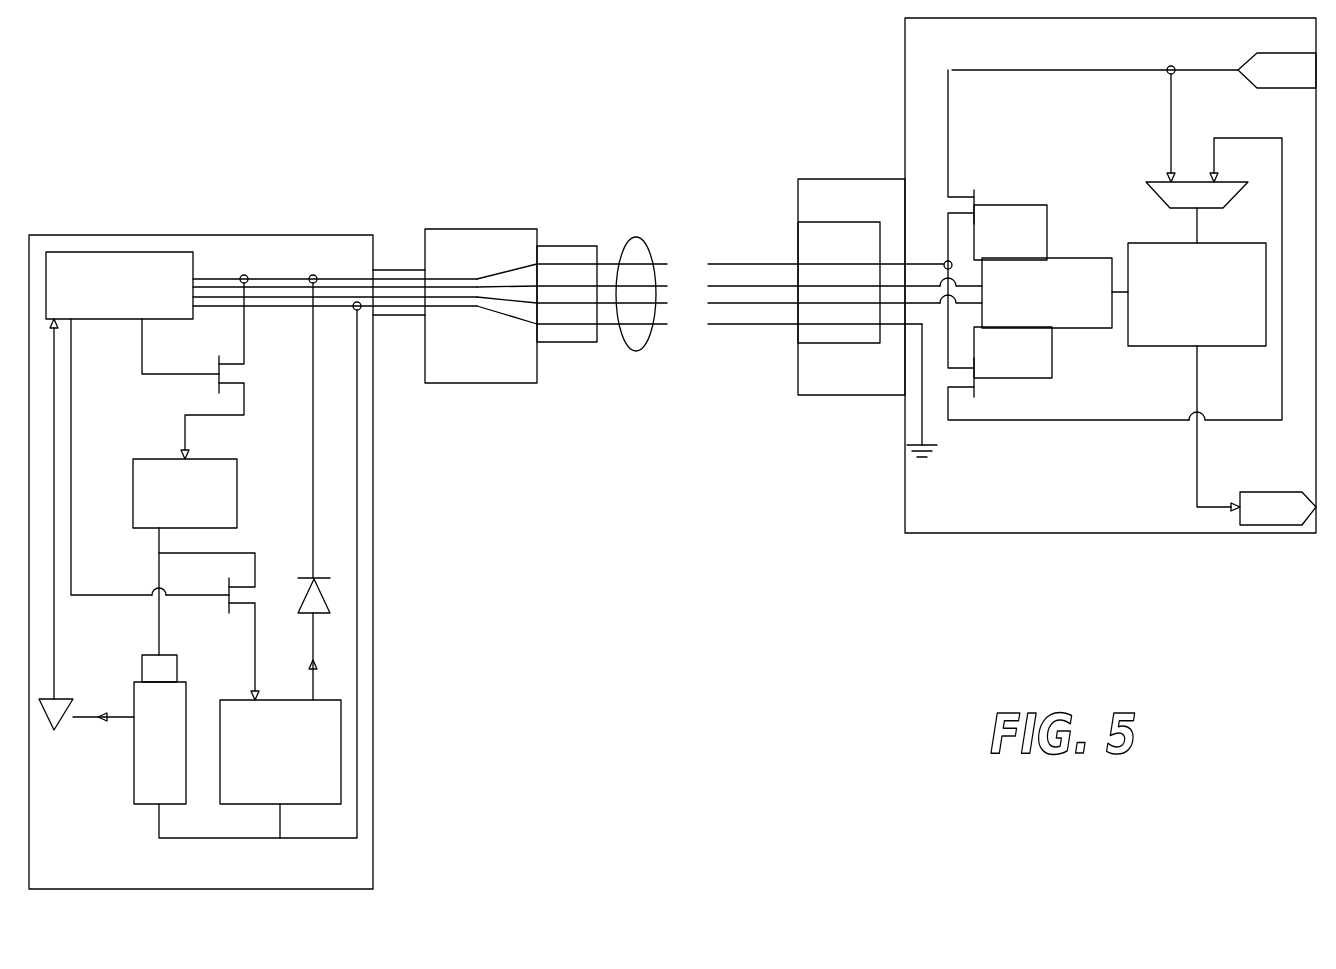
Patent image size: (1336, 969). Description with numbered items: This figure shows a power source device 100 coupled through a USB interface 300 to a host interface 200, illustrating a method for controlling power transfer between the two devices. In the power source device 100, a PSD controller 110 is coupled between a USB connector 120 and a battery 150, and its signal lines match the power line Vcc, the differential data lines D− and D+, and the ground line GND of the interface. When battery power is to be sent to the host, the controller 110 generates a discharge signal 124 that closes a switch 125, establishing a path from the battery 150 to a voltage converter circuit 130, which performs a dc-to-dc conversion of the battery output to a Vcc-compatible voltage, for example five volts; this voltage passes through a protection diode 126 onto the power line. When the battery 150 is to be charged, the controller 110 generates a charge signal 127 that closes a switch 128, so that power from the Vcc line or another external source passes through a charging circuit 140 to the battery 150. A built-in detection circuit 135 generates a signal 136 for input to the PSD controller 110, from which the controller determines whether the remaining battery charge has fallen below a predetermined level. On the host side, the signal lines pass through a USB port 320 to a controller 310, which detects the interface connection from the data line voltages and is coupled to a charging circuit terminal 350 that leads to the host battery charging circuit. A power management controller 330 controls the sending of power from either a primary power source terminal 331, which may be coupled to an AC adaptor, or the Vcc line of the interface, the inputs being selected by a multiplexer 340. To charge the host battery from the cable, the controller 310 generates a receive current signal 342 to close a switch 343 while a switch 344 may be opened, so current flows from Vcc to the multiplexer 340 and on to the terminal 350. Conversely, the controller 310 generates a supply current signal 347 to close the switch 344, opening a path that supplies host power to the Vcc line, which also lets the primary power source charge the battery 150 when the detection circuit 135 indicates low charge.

The power source device 100 is at (278, 235).
The PSD controller 110 is at (130, 321).
The USB connector 120 is at (483, 229).
The discharge signal 124 is at (73, 432).
The switch 125 is at (230, 602).
The protection diode 126 is at (307, 618).
The charge signal 127 is at (153, 360).
The switch 128 is at (217, 381).
The voltage converter circuit 130 is at (307, 697).
The detection circuit 135 is at (60, 723).
The signal 136 is at (58, 648).
The charging circuit 140 is at (238, 493).
The battery 150 is at (133, 787).
The host interface 200 is at (905, 85).
The USB interface 300 is at (637, 238).
The controller 310 is at (1067, 258).
The USB port 320 is at (830, 177).
The power management controller 330 is at (1162, 347).
The primary power source terminal 331 is at (1287, 92).
The multiplexer 340 is at (1158, 190).
The receive current signal 342 is at (1052, 365).
The switch 343 is at (978, 390).
The switch 344 is at (976, 195).
The supply current signal 347 is at (1040, 205).
The charging circuit terminal 350 is at (1283, 527).